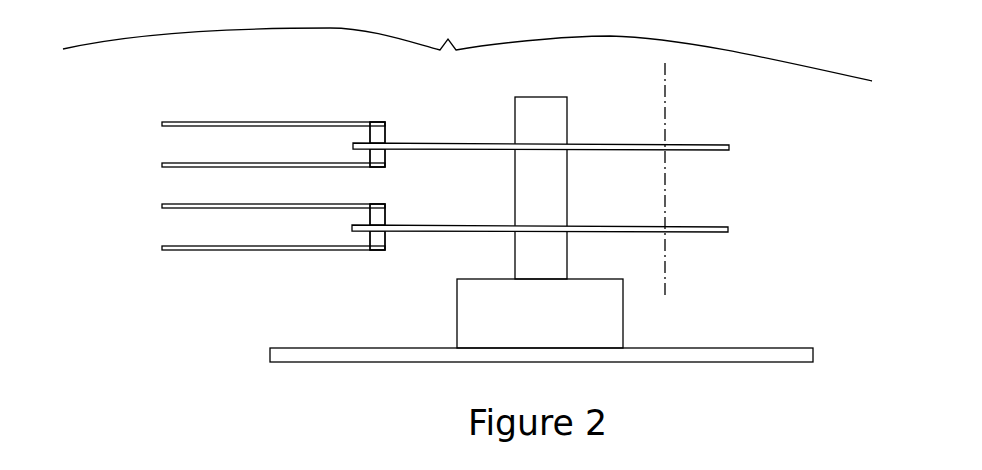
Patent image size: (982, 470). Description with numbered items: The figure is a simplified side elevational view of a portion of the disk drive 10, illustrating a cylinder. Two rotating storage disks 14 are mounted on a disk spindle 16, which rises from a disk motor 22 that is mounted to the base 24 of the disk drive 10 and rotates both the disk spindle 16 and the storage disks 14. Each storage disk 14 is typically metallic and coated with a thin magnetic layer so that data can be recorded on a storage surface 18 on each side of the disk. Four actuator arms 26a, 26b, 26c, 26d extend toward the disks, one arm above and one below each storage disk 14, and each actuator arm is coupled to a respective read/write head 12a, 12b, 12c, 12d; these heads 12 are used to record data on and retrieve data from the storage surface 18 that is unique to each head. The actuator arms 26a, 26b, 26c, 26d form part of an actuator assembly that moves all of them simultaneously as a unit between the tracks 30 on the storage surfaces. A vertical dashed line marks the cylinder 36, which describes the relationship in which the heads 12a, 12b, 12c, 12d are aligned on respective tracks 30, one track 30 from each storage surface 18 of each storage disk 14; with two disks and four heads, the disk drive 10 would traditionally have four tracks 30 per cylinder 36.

The disk drive 10 is at (467, 46).
The heads 12 is at (362, 132).
The read/write head 12a is at (390, 125).
The read/write head 12b is at (390, 157).
The read/write head 12c is at (390, 208).
The read/write head 12d is at (390, 242).
The storage disk 14 is at (579, 154).
The disk spindle 16 is at (536, 92).
The storage surface 18 is at (699, 140).
The disk motor 22 is at (454, 312).
The base 24 is at (733, 345).
The actuator arm 26a is at (156, 120).
The actuator arm 26b is at (157, 160).
The actuator arm 26c is at (158, 213).
The actuator arm 26d is at (157, 251).
The tracks 30 is at (660, 140).
The cylinder 36 is at (672, 102).